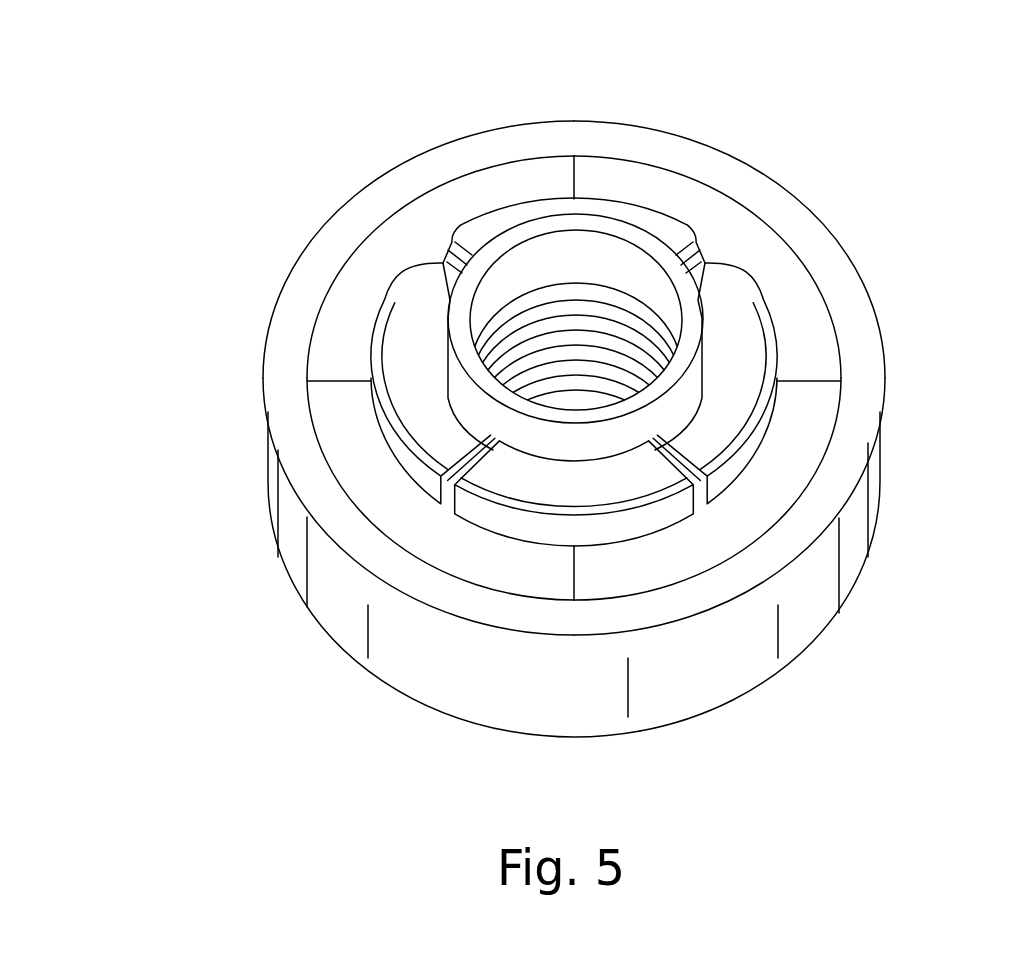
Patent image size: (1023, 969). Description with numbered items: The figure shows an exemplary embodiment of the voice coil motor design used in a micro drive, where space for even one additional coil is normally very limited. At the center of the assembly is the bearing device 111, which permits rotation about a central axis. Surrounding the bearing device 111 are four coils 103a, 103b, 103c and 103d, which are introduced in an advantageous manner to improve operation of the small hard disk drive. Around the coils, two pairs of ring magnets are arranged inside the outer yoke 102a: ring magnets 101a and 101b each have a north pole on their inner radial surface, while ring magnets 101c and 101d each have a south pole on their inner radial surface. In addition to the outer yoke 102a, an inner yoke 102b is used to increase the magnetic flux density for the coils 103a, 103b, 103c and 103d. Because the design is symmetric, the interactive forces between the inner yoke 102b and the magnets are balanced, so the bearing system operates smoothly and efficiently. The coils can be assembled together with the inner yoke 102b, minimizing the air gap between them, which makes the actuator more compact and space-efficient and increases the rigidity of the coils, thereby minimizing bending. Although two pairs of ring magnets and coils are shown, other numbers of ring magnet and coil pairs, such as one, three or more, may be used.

The ring magnet 101a is at (428, 533).
The ring magnet 101b is at (722, 218).
The ring magnet 101c is at (376, 272).
The ring magnet 101d is at (763, 497).
The outer yoke 102a is at (747, 562).
The inner yoke 102b is at (592, 415).
The coil 103a is at (420, 376).
The coil 103b is at (737, 392).
The coil 103c is at (545, 493).
The coil 103d is at (592, 207).
The bearing device 111 is at (537, 297).